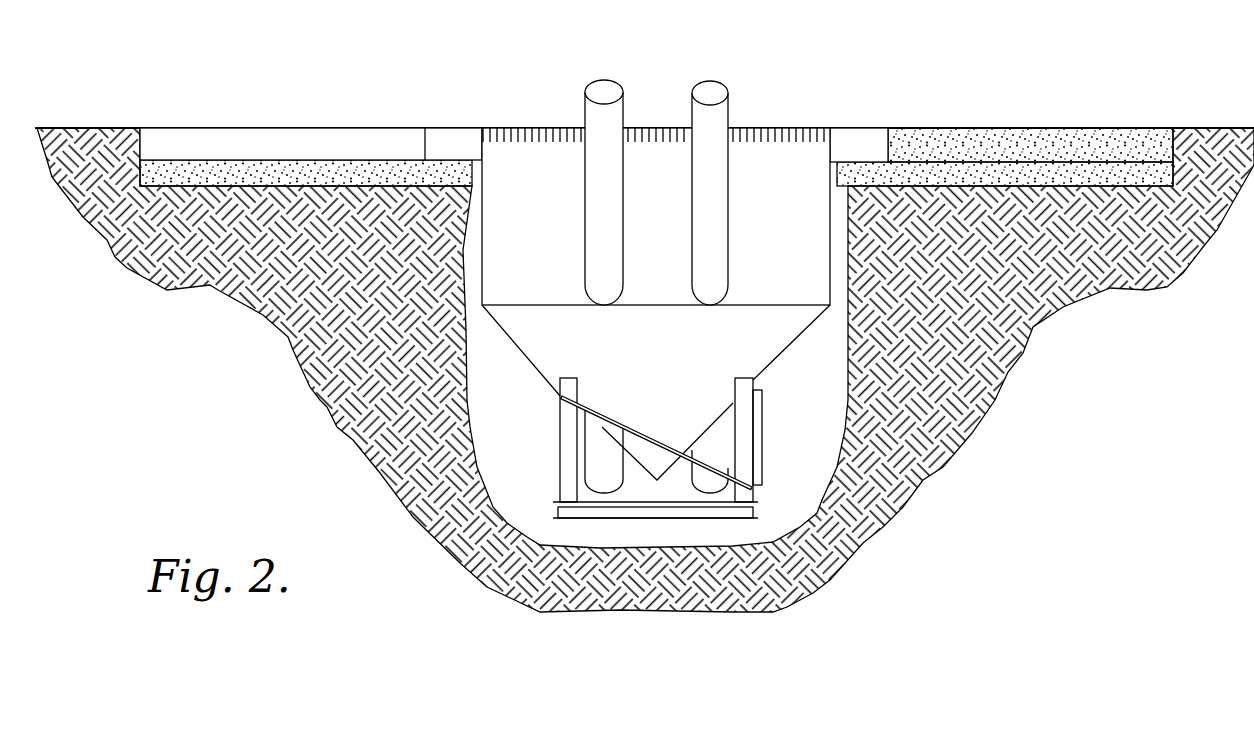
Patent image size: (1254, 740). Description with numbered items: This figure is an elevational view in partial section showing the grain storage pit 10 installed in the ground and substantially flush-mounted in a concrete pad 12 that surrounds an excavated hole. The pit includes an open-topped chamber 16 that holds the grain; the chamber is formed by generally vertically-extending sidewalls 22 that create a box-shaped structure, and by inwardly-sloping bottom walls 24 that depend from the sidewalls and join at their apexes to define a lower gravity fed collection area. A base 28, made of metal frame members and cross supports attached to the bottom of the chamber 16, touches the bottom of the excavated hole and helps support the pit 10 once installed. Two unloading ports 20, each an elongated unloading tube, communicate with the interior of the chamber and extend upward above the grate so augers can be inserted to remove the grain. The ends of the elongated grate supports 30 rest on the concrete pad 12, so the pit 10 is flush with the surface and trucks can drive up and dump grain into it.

The grain storage pit 10 is at (765, 72).
The concrete pad 12 is at (317, 117).
The open-topped chamber 16 is at (555, 150).
The unloading ports 20 is at (592, 198).
The sidewalls 22 is at (788, 160).
The bottom walls 24 is at (758, 358).
The base 28 is at (548, 460).
The supports 30 is at (451, 148).